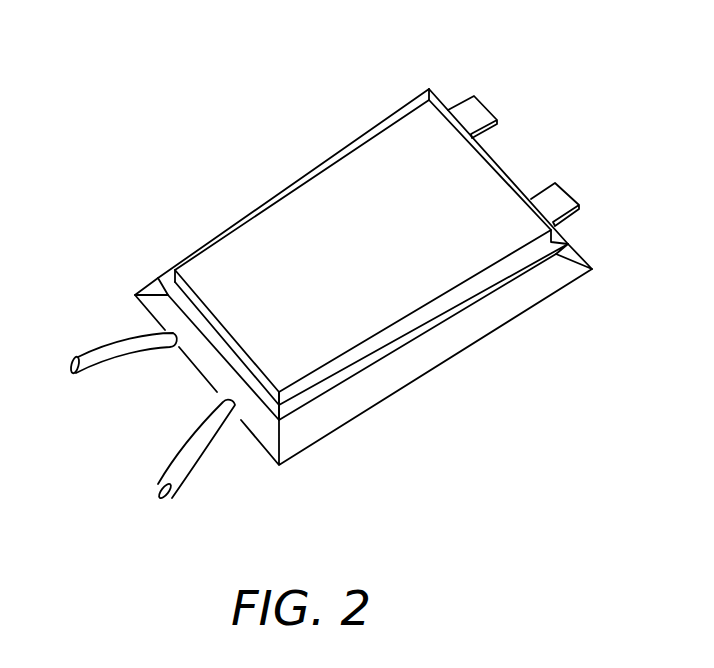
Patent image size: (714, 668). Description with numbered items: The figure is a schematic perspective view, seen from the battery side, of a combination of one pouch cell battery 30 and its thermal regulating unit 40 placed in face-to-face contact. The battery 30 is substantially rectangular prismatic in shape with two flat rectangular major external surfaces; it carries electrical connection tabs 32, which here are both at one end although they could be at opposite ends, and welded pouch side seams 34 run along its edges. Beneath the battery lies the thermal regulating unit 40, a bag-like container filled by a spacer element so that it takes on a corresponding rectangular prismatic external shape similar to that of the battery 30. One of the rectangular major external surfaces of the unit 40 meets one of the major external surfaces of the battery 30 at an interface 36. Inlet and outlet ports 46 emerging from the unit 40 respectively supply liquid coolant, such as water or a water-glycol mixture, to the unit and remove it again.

The pouch cell battery 30 is at (403, 183).
The electrical connection tabs 32 is at (477, 108).
The welded pouch side seams 34 is at (273, 197).
The interface 36 is at (510, 267).
The thermal regulating unit 40 is at (362, 390).
The inlet and outlet ports 46 is at (187, 441).